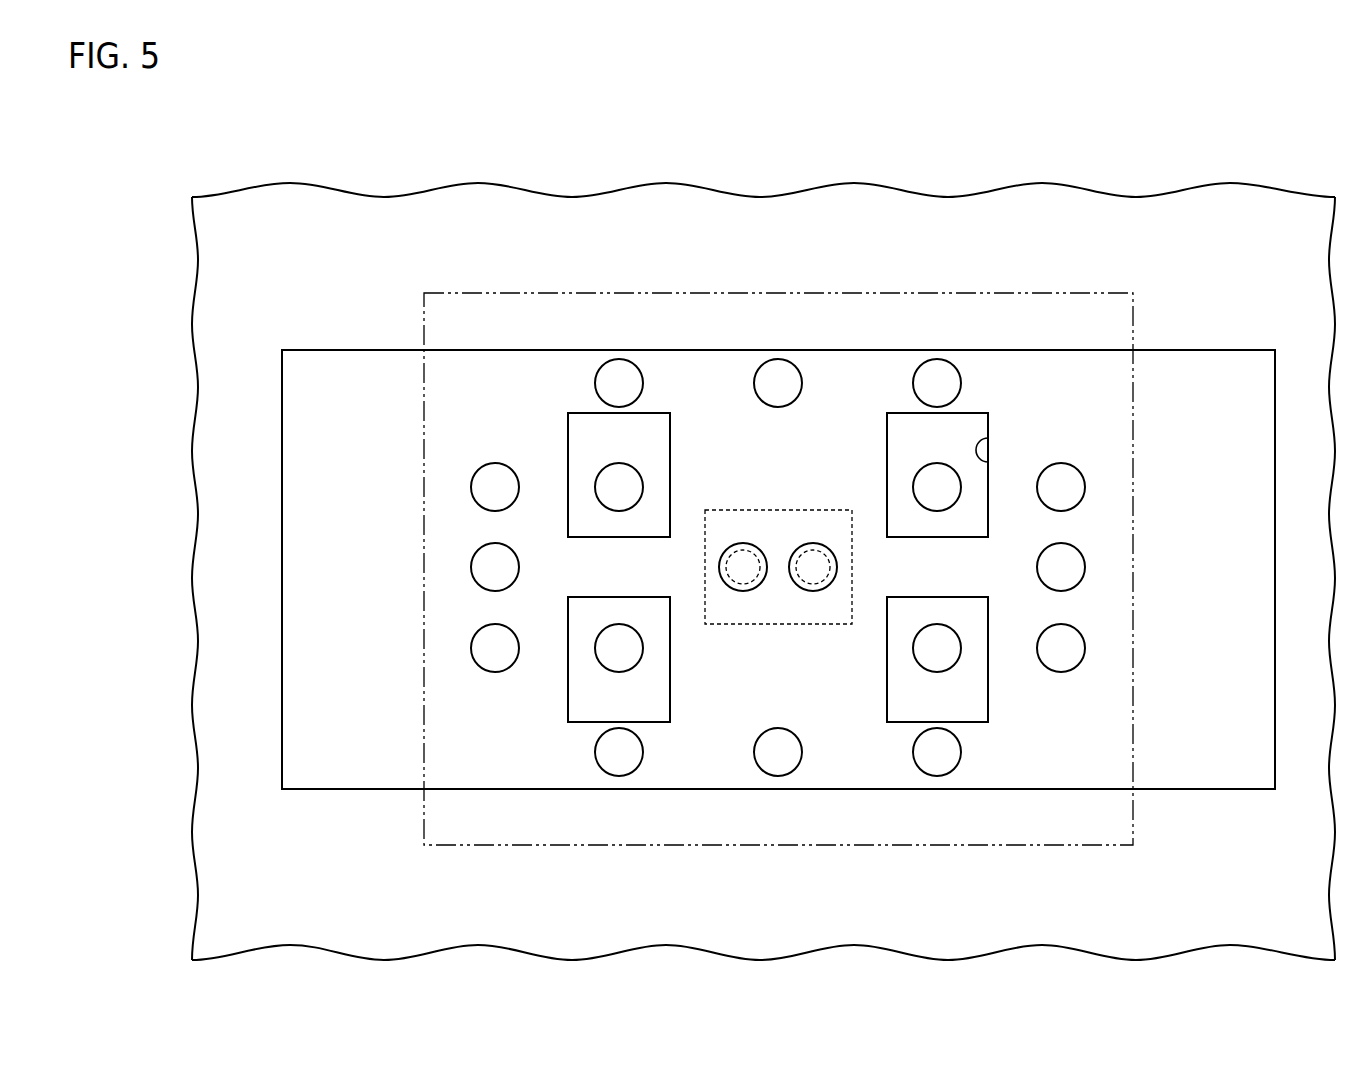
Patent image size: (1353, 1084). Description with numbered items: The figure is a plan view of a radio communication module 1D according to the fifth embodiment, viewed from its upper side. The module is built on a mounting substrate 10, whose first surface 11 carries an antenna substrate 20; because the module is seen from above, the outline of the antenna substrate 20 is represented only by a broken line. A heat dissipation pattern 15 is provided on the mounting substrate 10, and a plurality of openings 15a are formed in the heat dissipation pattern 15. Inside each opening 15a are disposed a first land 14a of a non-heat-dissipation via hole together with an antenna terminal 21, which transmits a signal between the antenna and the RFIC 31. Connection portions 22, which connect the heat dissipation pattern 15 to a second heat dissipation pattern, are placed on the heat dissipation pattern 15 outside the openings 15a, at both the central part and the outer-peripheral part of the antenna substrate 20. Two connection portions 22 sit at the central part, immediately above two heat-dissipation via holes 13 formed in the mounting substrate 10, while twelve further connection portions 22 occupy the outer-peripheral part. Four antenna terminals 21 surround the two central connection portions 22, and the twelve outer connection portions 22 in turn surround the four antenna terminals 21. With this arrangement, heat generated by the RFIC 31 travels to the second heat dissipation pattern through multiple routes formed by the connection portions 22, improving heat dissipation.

The radio communication module 1D is at (196, 151).
The mounting substrate 10 is at (490, 176).
The first surface 11 is at (695, 203).
The heat-dissipation via hole 13 is at (740, 583).
The first land 14a is at (963, 487).
The antenna terminal 21 is at (778, 567).
The heat dissipation pattern 15 is at (1208, 357).
The opening 15a is at (987, 465).
The antenna substrate 20 is at (1018, 292).
The connection portion 22 is at (760, 548).
The RFIC 31 is at (810, 624).